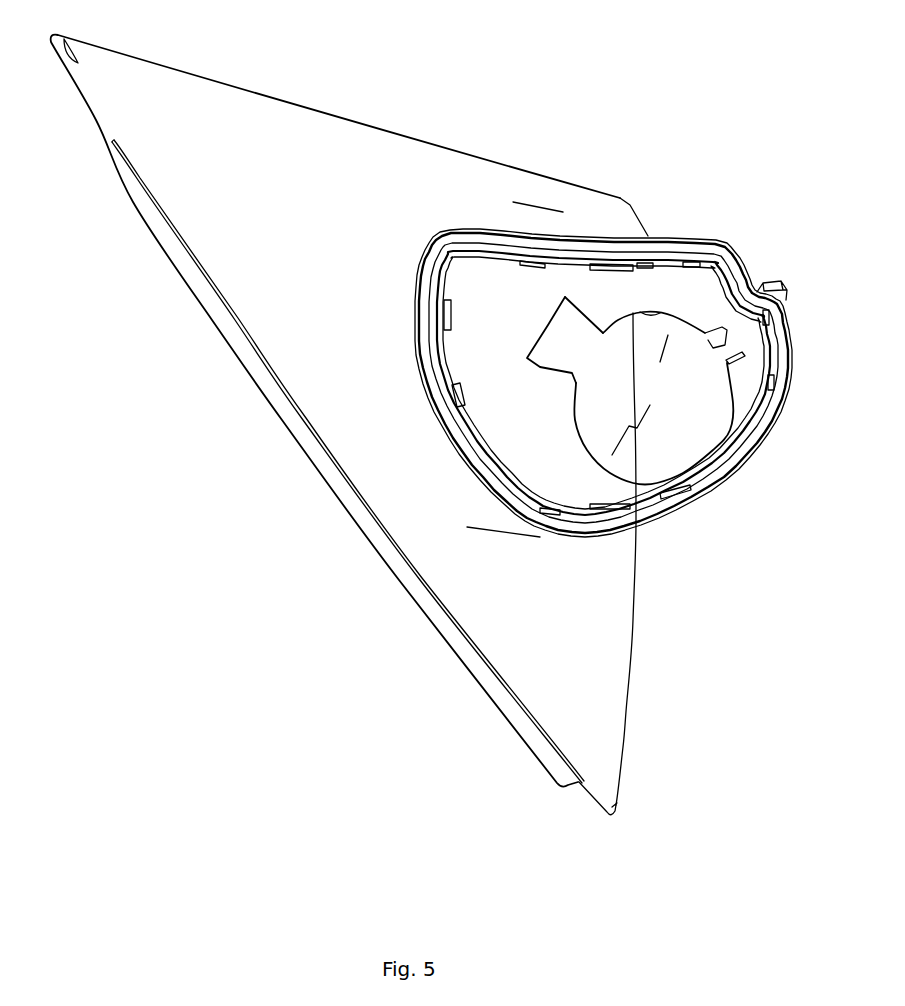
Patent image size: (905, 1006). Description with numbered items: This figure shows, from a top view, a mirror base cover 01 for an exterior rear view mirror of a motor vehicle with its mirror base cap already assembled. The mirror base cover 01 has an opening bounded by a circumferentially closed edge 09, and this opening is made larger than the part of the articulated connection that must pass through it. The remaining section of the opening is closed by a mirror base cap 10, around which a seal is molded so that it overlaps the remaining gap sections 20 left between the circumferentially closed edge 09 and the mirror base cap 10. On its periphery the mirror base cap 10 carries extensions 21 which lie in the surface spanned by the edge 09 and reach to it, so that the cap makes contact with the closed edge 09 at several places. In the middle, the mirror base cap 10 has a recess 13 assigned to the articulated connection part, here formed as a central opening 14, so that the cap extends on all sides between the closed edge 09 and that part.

The mirror base cover 01 is at (343, 363).
The circumferentially closed edge 09 is at (510, 430).
The mirror base cap 10 is at (500, 300).
The recess 13 is at (588, 362).
The central opening 14 is at (618, 393).
The remaining gap sections 20 is at (495, 258).
The extensions 21 is at (600, 262).